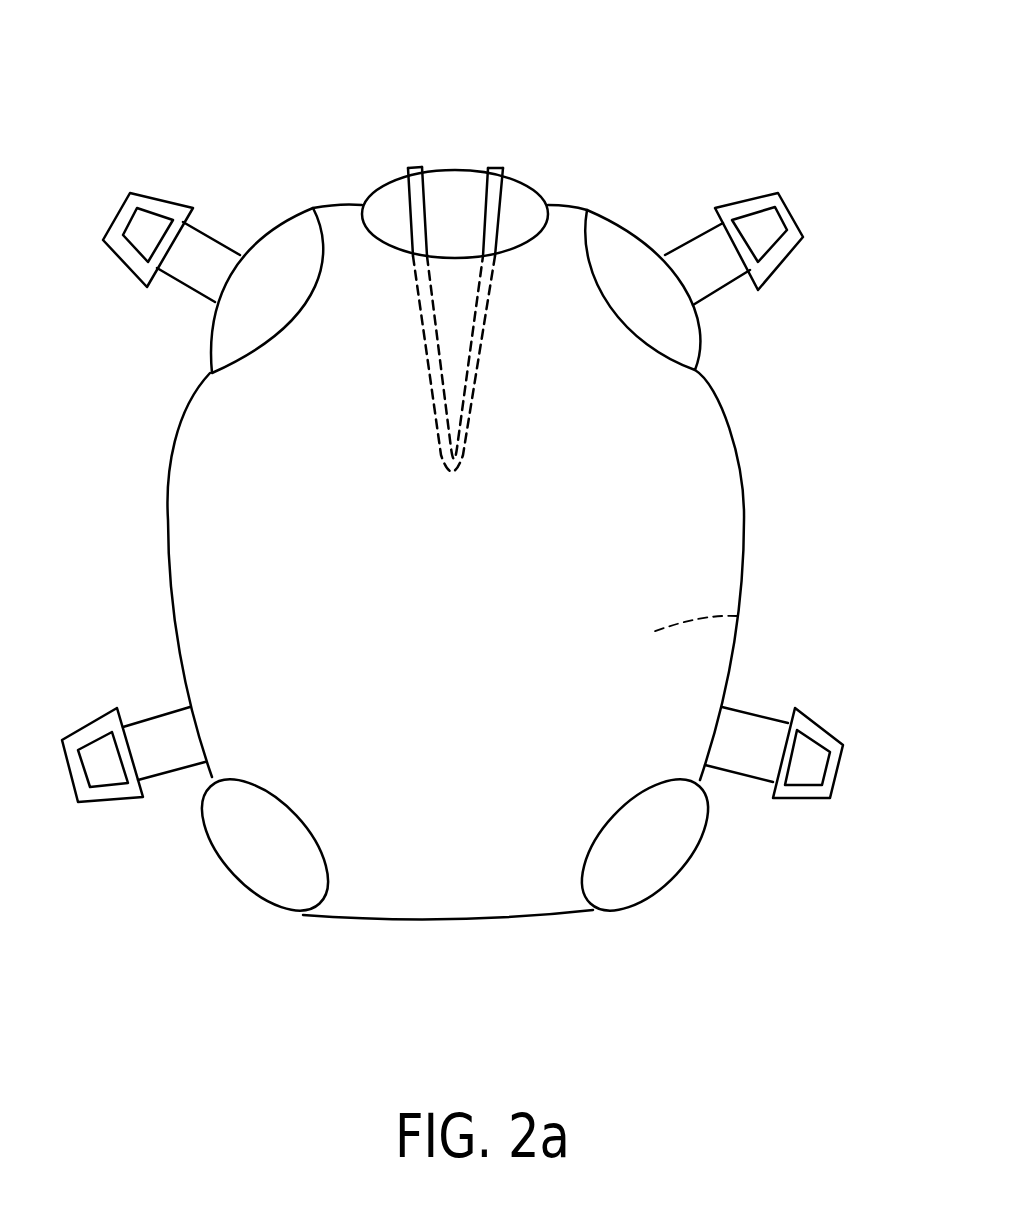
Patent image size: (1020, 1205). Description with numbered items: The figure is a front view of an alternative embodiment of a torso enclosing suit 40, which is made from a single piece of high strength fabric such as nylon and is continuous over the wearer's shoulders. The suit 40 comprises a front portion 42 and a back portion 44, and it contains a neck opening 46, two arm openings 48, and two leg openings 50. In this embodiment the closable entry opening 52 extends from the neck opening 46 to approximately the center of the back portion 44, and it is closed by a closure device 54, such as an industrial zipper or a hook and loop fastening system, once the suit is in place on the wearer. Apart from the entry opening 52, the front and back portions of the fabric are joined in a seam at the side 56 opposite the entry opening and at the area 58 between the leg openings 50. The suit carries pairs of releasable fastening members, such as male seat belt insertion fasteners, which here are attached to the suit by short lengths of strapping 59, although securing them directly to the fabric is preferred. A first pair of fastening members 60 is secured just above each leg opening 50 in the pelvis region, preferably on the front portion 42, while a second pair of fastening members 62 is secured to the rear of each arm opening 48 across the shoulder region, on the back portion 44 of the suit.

The torso enclosing suit 40 is at (793, 567).
The front portion 42 is at (377, 490).
The back portion 44 is at (737, 616).
The neck opening 46 is at (518, 207).
The arm openings 48 is at (287, 243).
The leg openings 50 is at (253, 845).
The entry opening 52 is at (457, 210).
The closure device 54 is at (418, 165).
The side seam 56 is at (740, 448).
The area between leg openings 58 is at (453, 920).
The strapping 59 is at (196, 293).
The first pair of fastening members 60 is at (120, 797).
The second pair of fastening members 62 is at (158, 200).